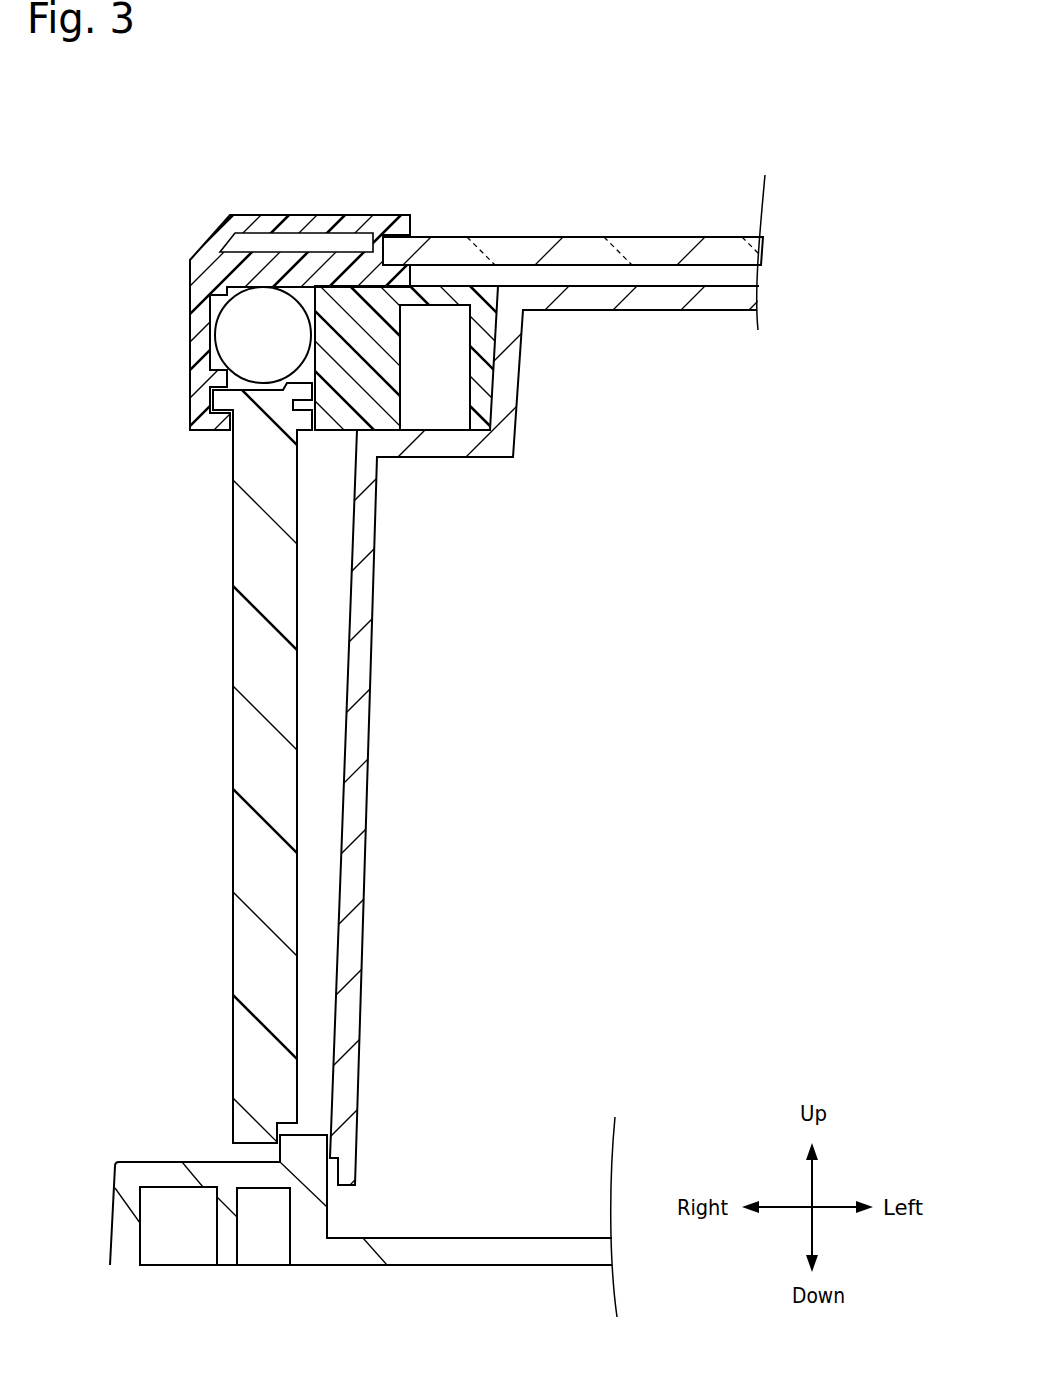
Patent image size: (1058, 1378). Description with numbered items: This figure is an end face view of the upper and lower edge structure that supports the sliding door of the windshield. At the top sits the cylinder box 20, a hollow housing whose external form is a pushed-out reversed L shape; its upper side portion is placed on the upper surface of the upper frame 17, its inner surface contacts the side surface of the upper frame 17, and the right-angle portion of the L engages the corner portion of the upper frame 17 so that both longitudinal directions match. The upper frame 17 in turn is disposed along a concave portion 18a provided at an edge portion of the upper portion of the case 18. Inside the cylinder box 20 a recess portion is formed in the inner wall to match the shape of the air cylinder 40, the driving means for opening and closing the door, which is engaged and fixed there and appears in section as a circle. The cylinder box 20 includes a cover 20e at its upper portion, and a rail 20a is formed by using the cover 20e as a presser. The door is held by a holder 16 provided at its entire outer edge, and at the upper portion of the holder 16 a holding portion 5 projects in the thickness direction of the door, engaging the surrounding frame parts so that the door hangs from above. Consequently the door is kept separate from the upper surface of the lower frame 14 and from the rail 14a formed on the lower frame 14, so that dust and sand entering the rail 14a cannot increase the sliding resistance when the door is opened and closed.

The holding portion 5 is at (217, 447).
The lower frame 14 is at (128, 1195).
The rail 14a is at (287, 1156).
The holder 16 is at (257, 776).
The upper frame 17 is at (478, 345).
The case 18 is at (362, 720).
The concave portion 18a is at (455, 430).
The cylinder box 20 is at (178, 290).
The rail 20a is at (410, 250).
The cover 20e is at (240, 215).
The air cylinder 40 is at (242, 354).